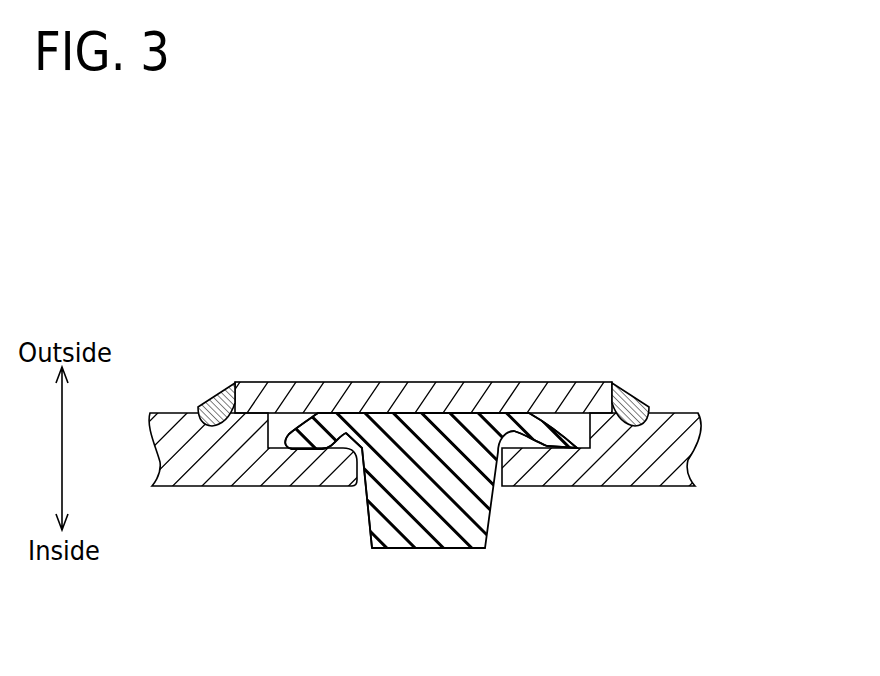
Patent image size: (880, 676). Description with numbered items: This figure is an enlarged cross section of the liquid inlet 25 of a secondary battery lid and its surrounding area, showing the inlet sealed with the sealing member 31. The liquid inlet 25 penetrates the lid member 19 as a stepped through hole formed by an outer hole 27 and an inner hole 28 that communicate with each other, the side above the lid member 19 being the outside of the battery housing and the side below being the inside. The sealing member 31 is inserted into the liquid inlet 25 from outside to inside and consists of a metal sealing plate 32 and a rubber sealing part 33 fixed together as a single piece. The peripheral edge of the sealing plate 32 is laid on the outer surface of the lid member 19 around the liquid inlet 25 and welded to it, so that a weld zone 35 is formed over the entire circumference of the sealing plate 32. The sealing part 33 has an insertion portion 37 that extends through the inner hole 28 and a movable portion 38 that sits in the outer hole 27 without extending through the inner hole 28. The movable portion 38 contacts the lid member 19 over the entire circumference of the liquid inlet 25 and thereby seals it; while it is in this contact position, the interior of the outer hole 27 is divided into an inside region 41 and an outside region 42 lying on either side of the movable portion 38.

The lid member 19 is at (690, 443).
The liquid inlet 25 is at (334, 585).
The outer hole 27 is at (283, 437).
The inner hole 28 is at (362, 468).
The sealing member 31 is at (566, 238).
The sealing plate 32 is at (413, 382).
The sealing part 33 is at (594, 289).
The weld zone 35 is at (641, 395).
The insertion portion 37 is at (467, 423).
The movable portion 38 is at (547, 433).
The inside region 41 is at (513, 440).
The outside region 42 is at (575, 422).